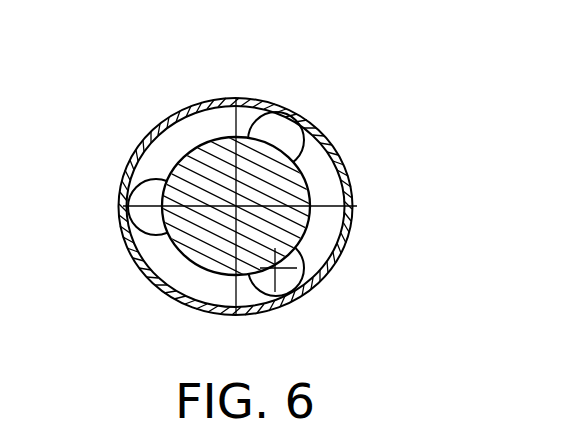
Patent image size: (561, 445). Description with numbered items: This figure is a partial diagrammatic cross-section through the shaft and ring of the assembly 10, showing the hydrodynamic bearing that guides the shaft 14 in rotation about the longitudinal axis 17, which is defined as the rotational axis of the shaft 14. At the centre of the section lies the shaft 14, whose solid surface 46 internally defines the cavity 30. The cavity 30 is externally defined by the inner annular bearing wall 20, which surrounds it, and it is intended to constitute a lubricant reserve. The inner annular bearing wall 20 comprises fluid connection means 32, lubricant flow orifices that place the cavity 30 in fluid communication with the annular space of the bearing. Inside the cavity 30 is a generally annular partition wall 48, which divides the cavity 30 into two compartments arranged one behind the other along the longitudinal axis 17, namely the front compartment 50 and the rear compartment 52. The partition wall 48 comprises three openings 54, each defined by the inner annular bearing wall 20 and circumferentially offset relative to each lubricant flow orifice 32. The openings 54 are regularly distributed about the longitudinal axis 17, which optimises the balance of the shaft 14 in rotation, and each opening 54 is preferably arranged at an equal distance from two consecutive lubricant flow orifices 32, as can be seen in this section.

The assembly 10 is at (322, 100).
The shaft 14 is at (190, 252).
The longitudinal axis 17 is at (343, 115).
The inner annular bearing wall 20 is at (233, 97).
The cavity 30 is at (373, 280).
The fluid connection means 32 is at (193, 147).
The solid surface 46 is at (143, 137).
The partition wall 48 is at (170, 143).
The front compartment 50 is at (323, 250).
The rear compartment 52 is at (307, 285).
The opening 54 is at (289, 126).